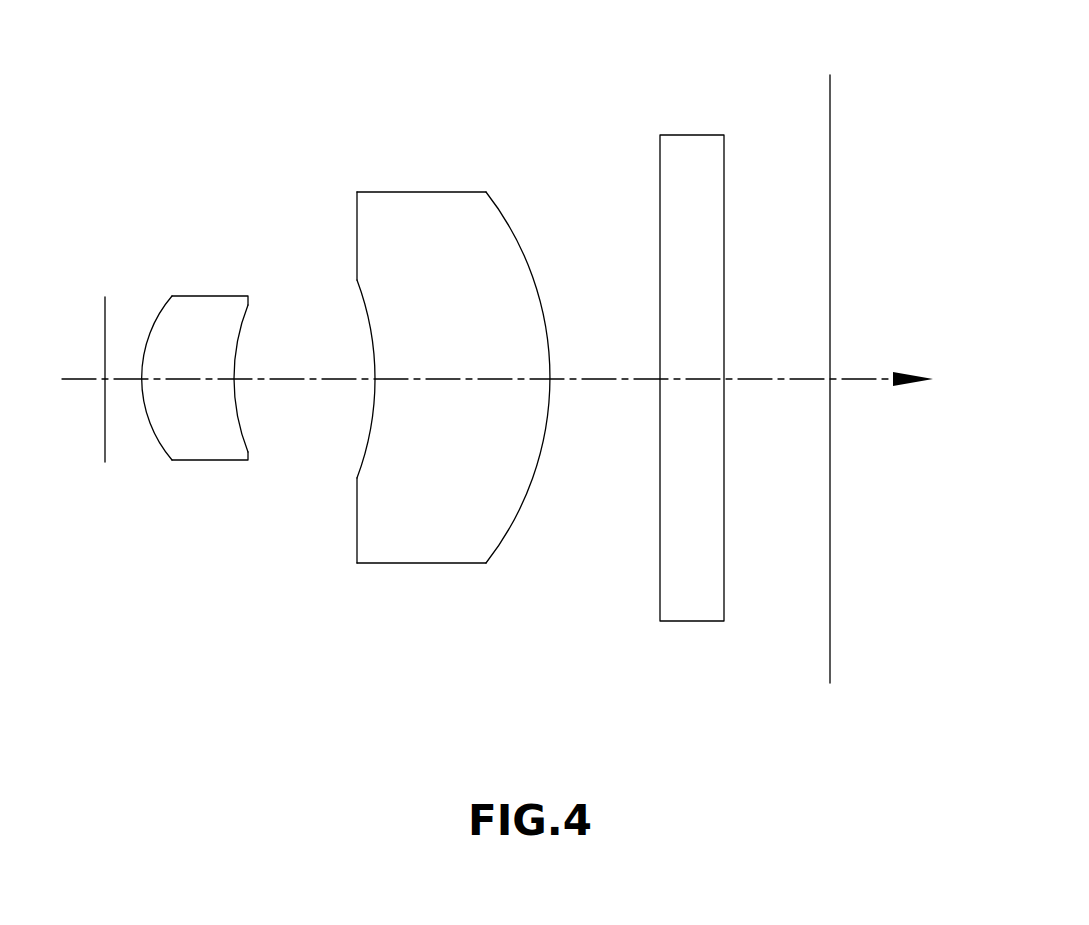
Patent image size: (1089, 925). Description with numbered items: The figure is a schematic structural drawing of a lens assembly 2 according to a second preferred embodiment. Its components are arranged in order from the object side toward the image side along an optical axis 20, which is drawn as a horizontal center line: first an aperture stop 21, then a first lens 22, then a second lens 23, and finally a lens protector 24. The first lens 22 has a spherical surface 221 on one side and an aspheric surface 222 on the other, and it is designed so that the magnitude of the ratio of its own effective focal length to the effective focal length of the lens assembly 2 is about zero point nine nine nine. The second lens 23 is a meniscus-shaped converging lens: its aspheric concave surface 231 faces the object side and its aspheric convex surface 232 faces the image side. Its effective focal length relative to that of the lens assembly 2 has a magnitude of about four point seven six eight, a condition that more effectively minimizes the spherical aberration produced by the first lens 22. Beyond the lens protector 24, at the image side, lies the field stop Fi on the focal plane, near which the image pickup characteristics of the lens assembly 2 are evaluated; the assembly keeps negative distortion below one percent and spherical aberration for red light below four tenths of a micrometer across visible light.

The lens assembly 2 is at (978, 106).
The optical axis 20 is at (90, 379).
The aperture stop 21 is at (105, 295).
The first lens 22 is at (199, 390).
The spherical surface 221 is at (153, 435).
The aspheric surface 222 is at (246, 318).
The second lens 23 is at (424, 399).
The aspheric concave surface 231 is at (370, 423).
The aspheric convex surface 232 is at (510, 225).
The lens protector 24 is at (691, 621).
The field stop Fi is at (830, 627).